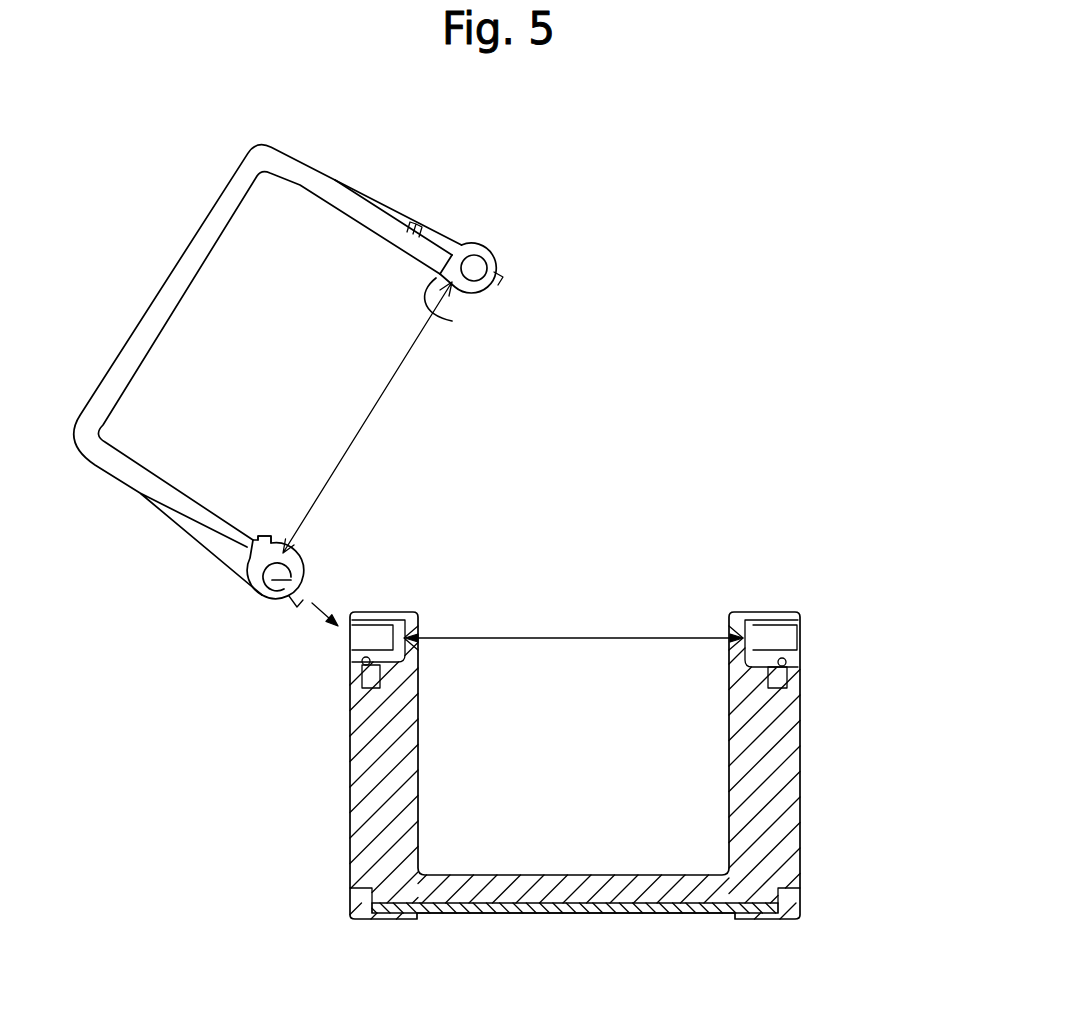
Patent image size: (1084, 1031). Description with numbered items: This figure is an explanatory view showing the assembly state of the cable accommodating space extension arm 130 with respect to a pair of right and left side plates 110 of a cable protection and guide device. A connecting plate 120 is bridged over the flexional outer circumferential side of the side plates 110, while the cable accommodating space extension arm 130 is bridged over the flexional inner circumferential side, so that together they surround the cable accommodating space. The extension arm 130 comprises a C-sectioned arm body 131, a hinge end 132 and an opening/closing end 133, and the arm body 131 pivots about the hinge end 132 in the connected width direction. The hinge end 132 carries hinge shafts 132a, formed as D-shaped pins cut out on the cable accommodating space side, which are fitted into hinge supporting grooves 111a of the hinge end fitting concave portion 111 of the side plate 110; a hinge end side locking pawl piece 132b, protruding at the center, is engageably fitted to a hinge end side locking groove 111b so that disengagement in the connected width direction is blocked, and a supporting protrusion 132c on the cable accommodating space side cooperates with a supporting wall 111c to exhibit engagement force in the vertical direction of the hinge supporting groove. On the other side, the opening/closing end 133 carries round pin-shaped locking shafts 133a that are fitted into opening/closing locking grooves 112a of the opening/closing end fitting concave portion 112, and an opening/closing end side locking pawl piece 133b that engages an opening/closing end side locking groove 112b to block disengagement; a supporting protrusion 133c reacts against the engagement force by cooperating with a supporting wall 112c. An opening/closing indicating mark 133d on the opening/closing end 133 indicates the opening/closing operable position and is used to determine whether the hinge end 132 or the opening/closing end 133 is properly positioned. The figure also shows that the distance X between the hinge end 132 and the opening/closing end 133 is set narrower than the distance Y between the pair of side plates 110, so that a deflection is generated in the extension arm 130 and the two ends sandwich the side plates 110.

The cable accommodating space extension arm 130 is at (416, 174).
The arm body 131 is at (155, 293).
The opening/closing end 133 is at (637, 168).
The locking shaft 133a is at (476, 268).
The opening/closing end side locking pawl piece 133b is at (499, 280).
The supporting protrusion 133c is at (452, 321).
The opening/closing indicating mark 133d is at (426, 228).
The hinge end 132 is at (504, 447).
The hinge shaft 132a is at (282, 576).
The hinge end side locking pawl piece 132b is at (299, 595).
The supporting protrusion 132c is at (274, 540).
The side plate 110 is at (352, 848).
The hinge end fitting concave portion 111 is at (230, 652).
The hinge supporting groove 111a is at (380, 656).
The hinge end side locking groove 111b is at (370, 693).
The supporting wall 111c is at (372, 641).
The opening/closing end fitting concave portion 112 is at (899, 550).
The opening/closing locking groove 112a is at (783, 637).
The opening/closing end side locking groove 112b is at (778, 675).
The supporting wall 112c is at (737, 623).
The connecting plate 120 is at (572, 908).